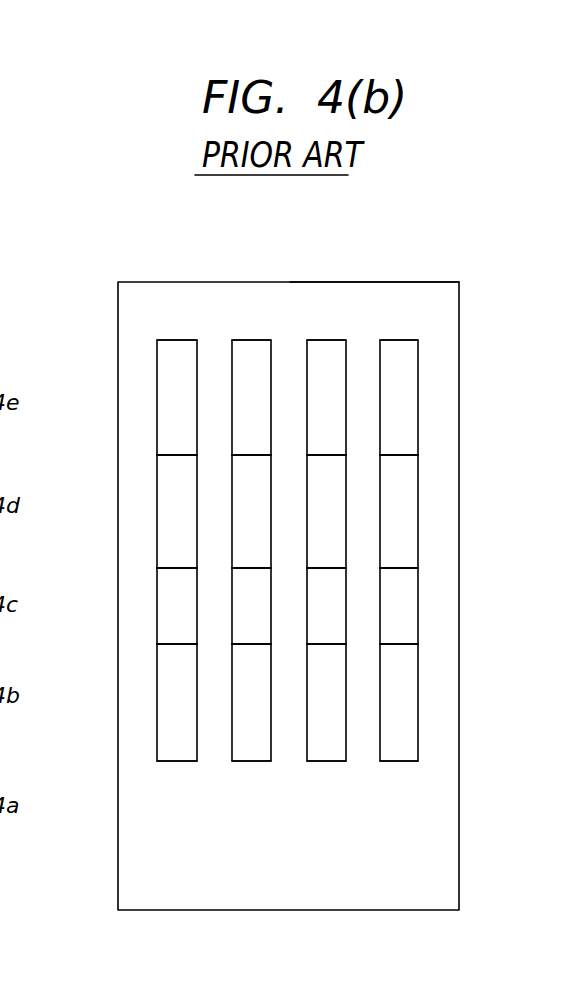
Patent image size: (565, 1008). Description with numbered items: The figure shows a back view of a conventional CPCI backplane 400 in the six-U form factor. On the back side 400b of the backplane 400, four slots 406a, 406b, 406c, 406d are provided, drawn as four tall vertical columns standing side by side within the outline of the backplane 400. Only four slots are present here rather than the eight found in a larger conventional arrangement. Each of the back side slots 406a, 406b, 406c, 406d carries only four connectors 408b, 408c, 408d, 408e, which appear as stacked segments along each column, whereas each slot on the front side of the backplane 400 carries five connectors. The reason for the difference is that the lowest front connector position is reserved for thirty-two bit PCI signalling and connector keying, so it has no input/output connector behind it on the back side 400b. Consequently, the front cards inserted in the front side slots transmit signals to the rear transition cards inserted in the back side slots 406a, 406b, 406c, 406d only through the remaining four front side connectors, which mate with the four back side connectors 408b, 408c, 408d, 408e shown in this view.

The backplane 400 is at (190, 282).
The back side of the backplane 400b is at (307, 287).
The back side slot 406a is at (398, 740).
The back side slot 406b is at (326, 740).
The back side slot 406c is at (252, 740).
The back side slot 406d is at (178, 740).
The back side connector 408b is at (162, 723).
The back side connector 408c is at (242, 623).
The back side connector 408d is at (162, 535).
The back side connector 408e is at (162, 420).